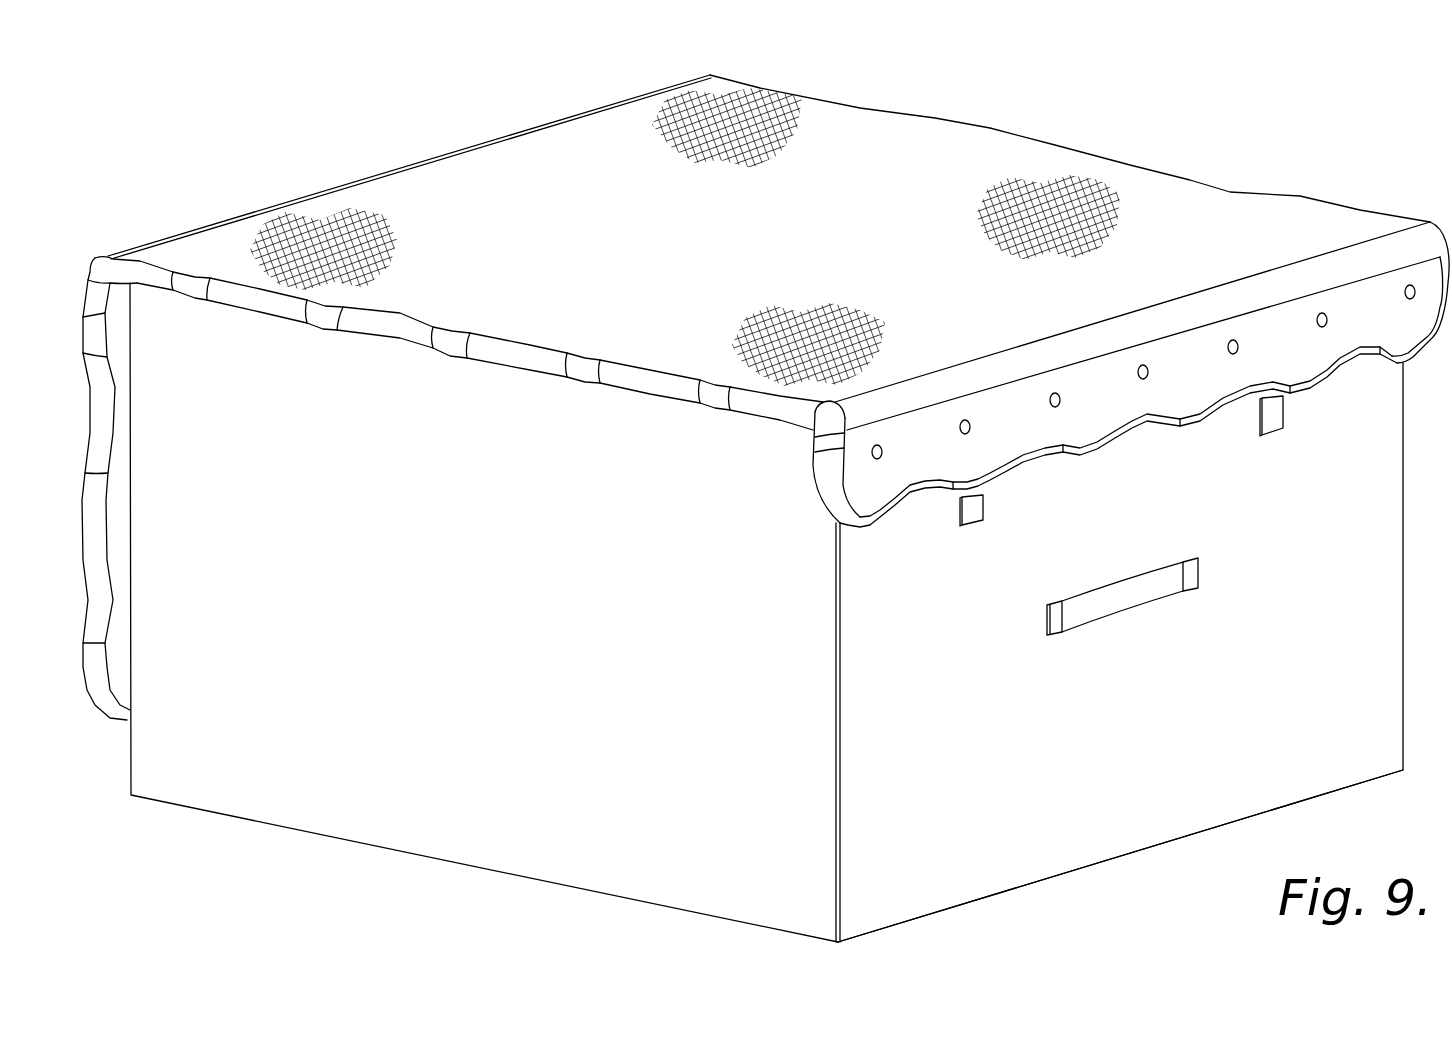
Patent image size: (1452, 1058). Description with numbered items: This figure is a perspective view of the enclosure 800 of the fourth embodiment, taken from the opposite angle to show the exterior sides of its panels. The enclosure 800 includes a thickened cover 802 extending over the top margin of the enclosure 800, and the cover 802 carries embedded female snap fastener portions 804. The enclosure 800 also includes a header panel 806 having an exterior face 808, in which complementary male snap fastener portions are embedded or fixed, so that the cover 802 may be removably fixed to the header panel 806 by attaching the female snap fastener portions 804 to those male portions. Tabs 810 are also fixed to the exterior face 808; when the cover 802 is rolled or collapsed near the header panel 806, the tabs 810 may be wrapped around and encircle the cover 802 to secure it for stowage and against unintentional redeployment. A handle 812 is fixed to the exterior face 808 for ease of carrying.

The enclosure 800 is at (769, 508).
The thickened cover 802 is at (882, 130).
The female snap fastener portions 804 is at (872, 455).
The header panel 806 is at (976, 862).
The exterior face 808 is at (1122, 825).
The tabs 810 is at (973, 518).
The handle 812 is at (1137, 605).